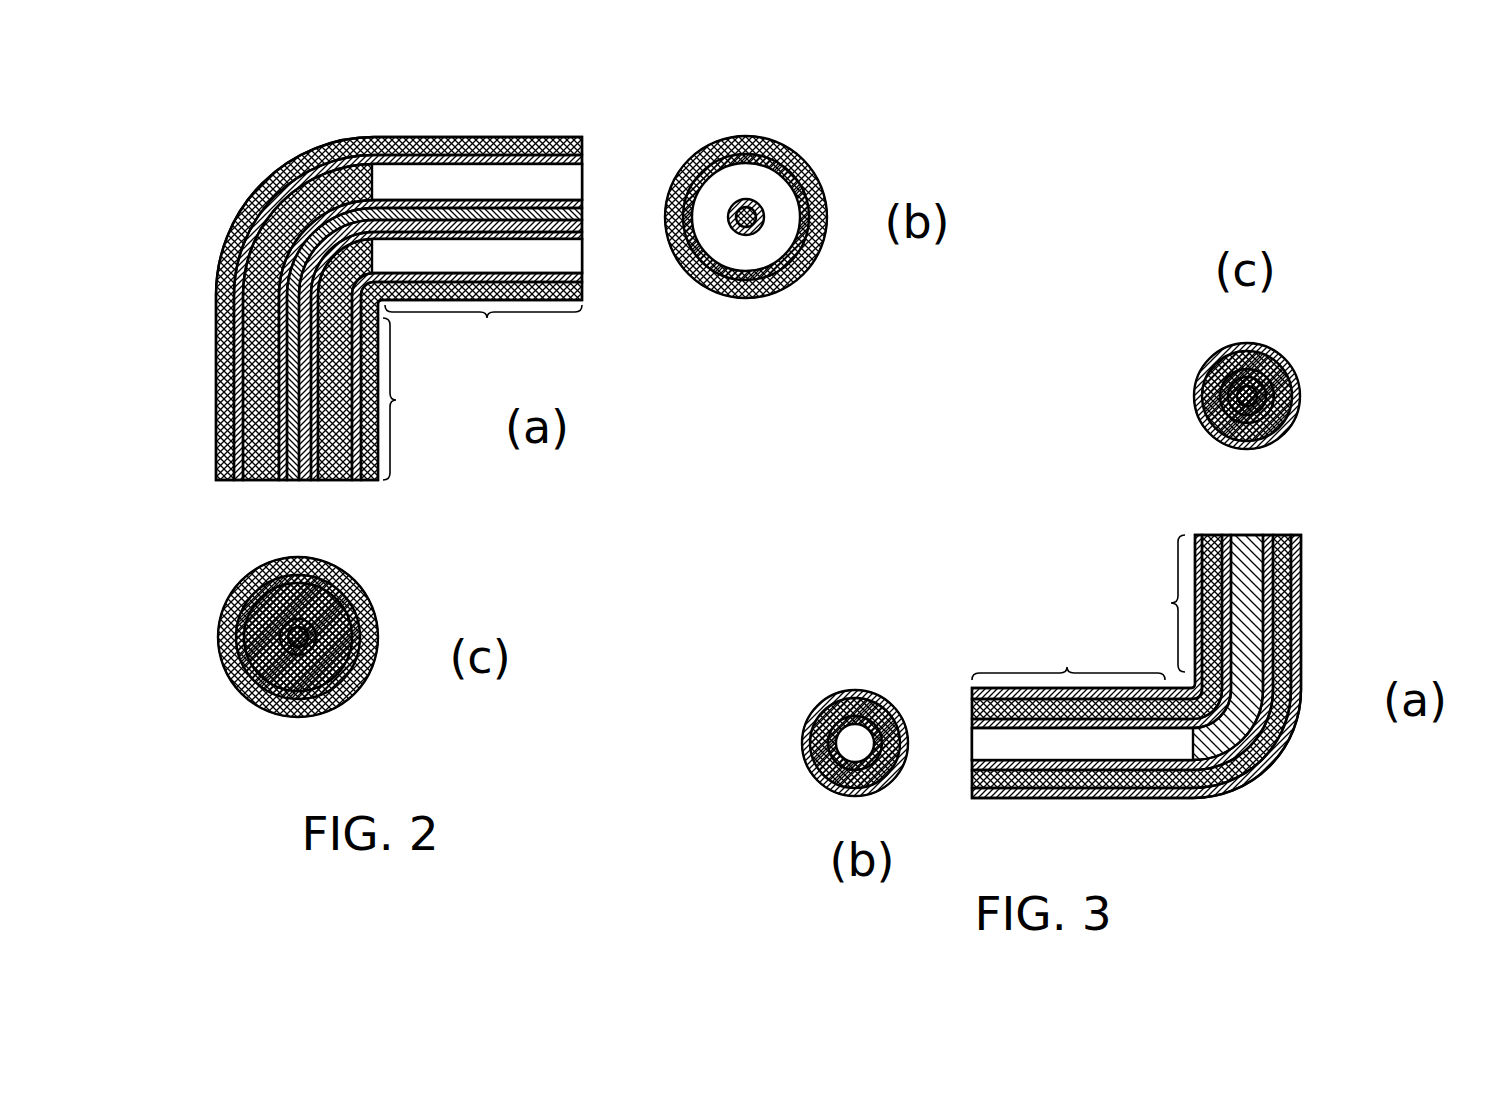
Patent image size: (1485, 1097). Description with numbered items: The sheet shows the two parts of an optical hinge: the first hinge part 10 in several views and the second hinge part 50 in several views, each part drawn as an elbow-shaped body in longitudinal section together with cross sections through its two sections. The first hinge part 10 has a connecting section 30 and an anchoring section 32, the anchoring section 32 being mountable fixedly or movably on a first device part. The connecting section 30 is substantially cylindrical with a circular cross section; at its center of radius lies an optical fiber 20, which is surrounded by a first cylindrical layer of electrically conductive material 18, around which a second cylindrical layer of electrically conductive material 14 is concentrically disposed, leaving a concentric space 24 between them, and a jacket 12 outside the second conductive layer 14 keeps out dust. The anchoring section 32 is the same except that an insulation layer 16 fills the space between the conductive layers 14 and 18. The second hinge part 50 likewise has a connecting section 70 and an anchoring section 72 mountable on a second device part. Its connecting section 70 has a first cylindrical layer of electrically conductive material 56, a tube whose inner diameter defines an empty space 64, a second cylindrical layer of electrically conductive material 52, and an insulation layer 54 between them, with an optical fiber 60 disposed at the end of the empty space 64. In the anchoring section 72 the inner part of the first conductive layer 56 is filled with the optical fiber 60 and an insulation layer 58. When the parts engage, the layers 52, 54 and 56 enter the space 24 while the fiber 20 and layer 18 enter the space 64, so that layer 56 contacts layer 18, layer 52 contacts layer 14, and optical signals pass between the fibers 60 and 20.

In FIG. 2, the first hinge part 10 is at (300, 112).
In FIG. 2, the jacket 12 is at (228, 455).
In FIG. 2, the second cylindrical layer of electrically conductive material 14 is at (240, 385).
In FIG. 2, the insulation layer 16 is at (250, 330).
In FIG. 2, the first cylindrical layer of electrically conductive material 18 is at (330, 470).
In FIG. 2, the optical fiber 20 is at (302, 468).
In FIG. 2, the concentric space 24 is at (583, 180).
In FIG. 2, the connecting section 30 is at (835, 85).
In FIG. 2, the anchoring section 32 is at (170, 545).
In FIG. 3, the second hinge part 50 is at (1090, 585).
In FIG. 3, the second cylindrical layer of electrically conductive material 52 is at (1093, 797).
In FIG. 3, the insulation layer 54 is at (1153, 777).
In FIG. 3, the first cylindrical layer of electrically conductive material 56 is at (975, 773).
In FIG. 3, the insulation layer 58 is at (1250, 733).
In FIG. 3, the optical fiber 60 is at (1260, 677).
In FIG. 3, the empty space 64 is at (982, 744).
In FIG. 3, the connecting section 70 is at (768, 660).
In FIG. 3, the anchoring section 72 is at (1160, 328).